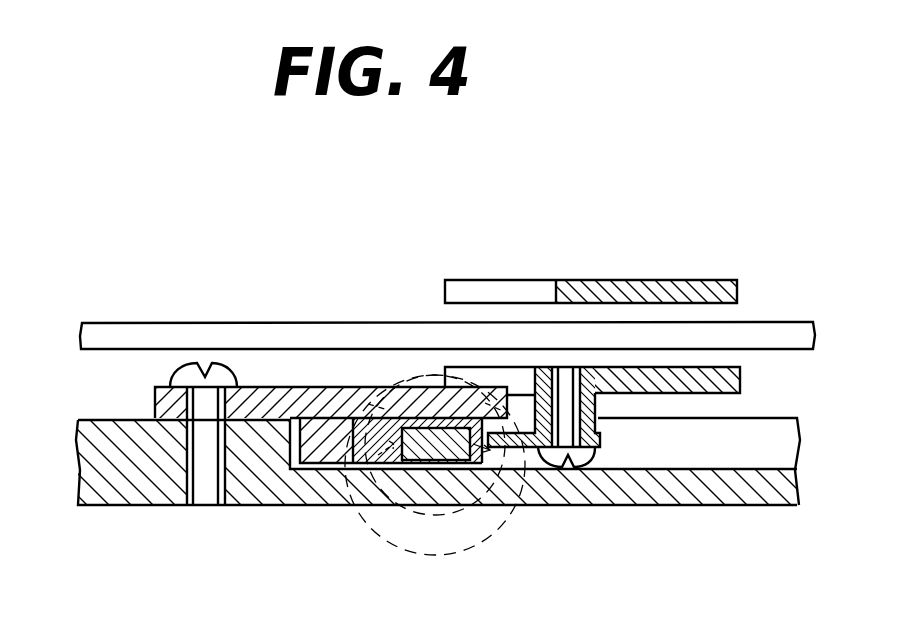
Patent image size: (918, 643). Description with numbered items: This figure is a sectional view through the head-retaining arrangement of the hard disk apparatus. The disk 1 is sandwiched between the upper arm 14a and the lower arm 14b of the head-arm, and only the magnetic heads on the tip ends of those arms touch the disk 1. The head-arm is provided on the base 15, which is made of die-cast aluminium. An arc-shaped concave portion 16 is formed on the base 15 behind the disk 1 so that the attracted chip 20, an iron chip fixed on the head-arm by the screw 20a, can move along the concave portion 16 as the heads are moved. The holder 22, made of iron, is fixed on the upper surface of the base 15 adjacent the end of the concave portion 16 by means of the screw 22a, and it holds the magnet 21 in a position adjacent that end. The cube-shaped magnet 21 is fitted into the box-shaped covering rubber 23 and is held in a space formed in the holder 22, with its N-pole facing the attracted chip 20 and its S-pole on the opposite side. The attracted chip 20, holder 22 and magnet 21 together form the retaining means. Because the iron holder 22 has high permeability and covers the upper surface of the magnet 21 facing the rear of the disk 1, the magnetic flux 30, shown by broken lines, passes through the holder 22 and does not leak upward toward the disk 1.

The disk 1 is at (107, 326).
The upper arm 14a is at (706, 280).
The lower arm 14b is at (742, 380).
The base 15 is at (100, 471).
The concave portion 16 is at (717, 460).
The attracted chip 20 is at (530, 450).
The screw 20a is at (592, 458).
The magnet 21 is at (427, 472).
The holder 22 is at (157, 405).
The screw 22a is at (238, 370).
The covering rubber 23 is at (362, 462).
The magnetic flux 30 is at (362, 397).